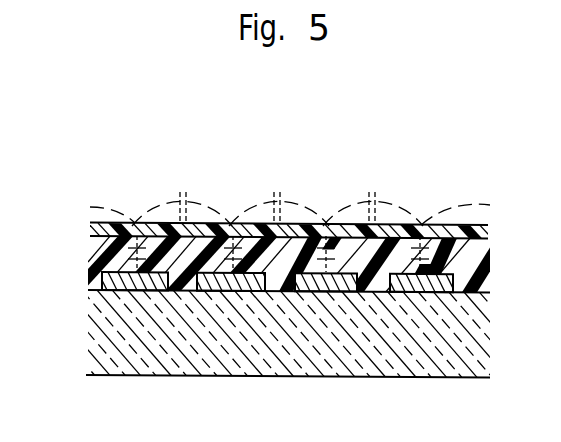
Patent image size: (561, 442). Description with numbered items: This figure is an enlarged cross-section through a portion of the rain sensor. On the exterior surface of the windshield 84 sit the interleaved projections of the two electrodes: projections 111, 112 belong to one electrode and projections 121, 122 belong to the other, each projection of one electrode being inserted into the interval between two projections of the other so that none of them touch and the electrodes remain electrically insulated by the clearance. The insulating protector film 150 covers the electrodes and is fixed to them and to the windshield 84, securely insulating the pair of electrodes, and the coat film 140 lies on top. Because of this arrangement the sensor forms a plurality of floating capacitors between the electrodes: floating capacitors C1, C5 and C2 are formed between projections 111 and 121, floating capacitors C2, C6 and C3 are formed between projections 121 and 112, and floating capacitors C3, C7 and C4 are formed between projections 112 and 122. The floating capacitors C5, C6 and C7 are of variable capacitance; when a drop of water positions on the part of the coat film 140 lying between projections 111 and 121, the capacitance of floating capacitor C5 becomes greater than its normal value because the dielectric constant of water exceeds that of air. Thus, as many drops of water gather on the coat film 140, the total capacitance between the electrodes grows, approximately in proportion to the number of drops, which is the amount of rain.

The windshield 84 is at (371, 365).
The projection 111 is at (137, 290).
The projection 112 is at (323, 290).
The projection 121 is at (228, 290).
The projection 122 is at (437, 290).
The coat film 140 is at (470, 234).
The insulating protector film 150 is at (93, 244).
The floating capacitor C1 is at (143, 249).
The floating capacitor C2 is at (238, 254).
The floating capacitor C3 is at (332, 250).
The floating capacitor C4 is at (427, 251).
The floating capacitor C5 is at (187, 194).
The floating capacitor C6 is at (280, 194).
The floating capacitor C7 is at (374, 194).